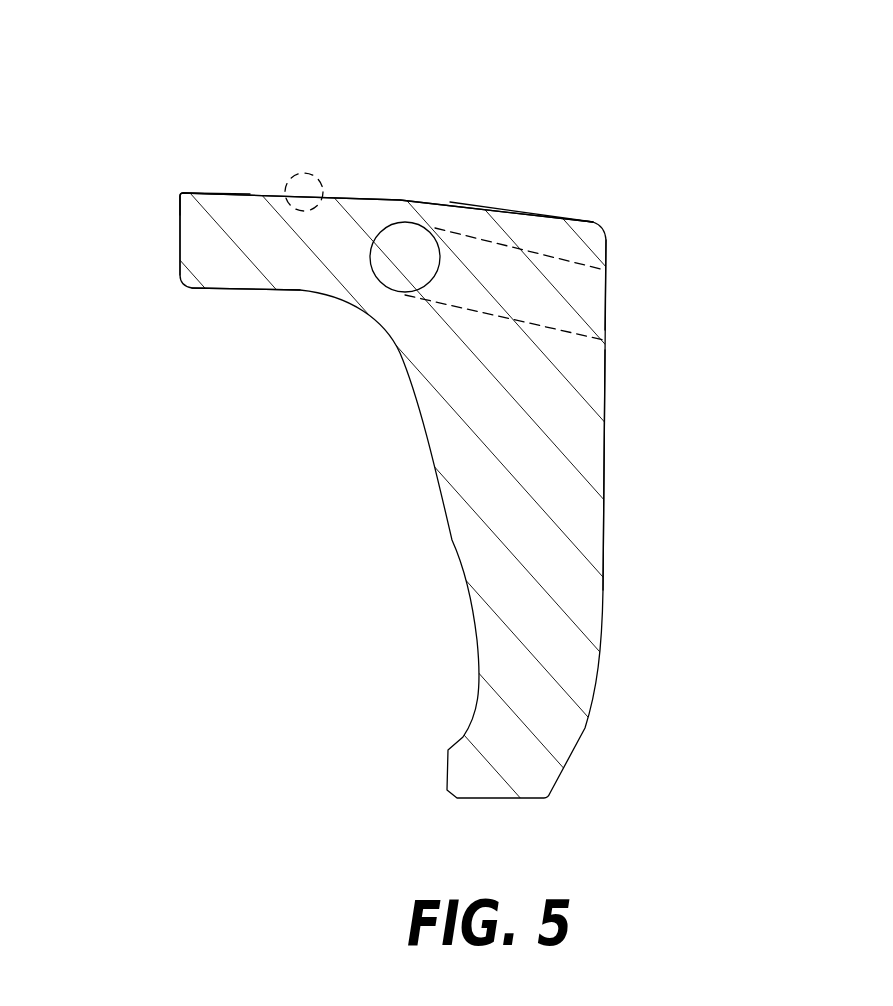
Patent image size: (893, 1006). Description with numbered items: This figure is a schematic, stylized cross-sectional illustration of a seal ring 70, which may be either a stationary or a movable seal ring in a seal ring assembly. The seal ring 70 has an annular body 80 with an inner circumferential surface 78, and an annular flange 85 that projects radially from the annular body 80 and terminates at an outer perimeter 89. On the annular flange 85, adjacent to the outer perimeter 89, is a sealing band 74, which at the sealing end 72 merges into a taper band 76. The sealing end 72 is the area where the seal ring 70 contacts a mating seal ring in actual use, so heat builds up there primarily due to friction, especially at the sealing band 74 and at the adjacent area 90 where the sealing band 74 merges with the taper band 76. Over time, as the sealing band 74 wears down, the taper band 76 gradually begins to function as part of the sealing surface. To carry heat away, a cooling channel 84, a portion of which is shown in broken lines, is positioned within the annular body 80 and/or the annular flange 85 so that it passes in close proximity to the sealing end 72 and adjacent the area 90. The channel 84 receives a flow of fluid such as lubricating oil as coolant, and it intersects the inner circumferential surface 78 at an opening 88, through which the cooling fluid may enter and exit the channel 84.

The seal ring 70 is at (705, 566).
The sealing end 72 is at (338, 104).
The sealing band 74 is at (200, 193).
The taper band 76 is at (527, 215).
The inner circumferential surface 78 is at (605, 447).
The annular body 80 is at (541, 598).
The cooling channel 84 is at (403, 222).
The annular flange 85 is at (334, 277).
The opening 88 is at (605, 304).
The outer perimeter 89 is at (180, 237).
The area where sealing band merges with taper band 90 is at (304, 193).